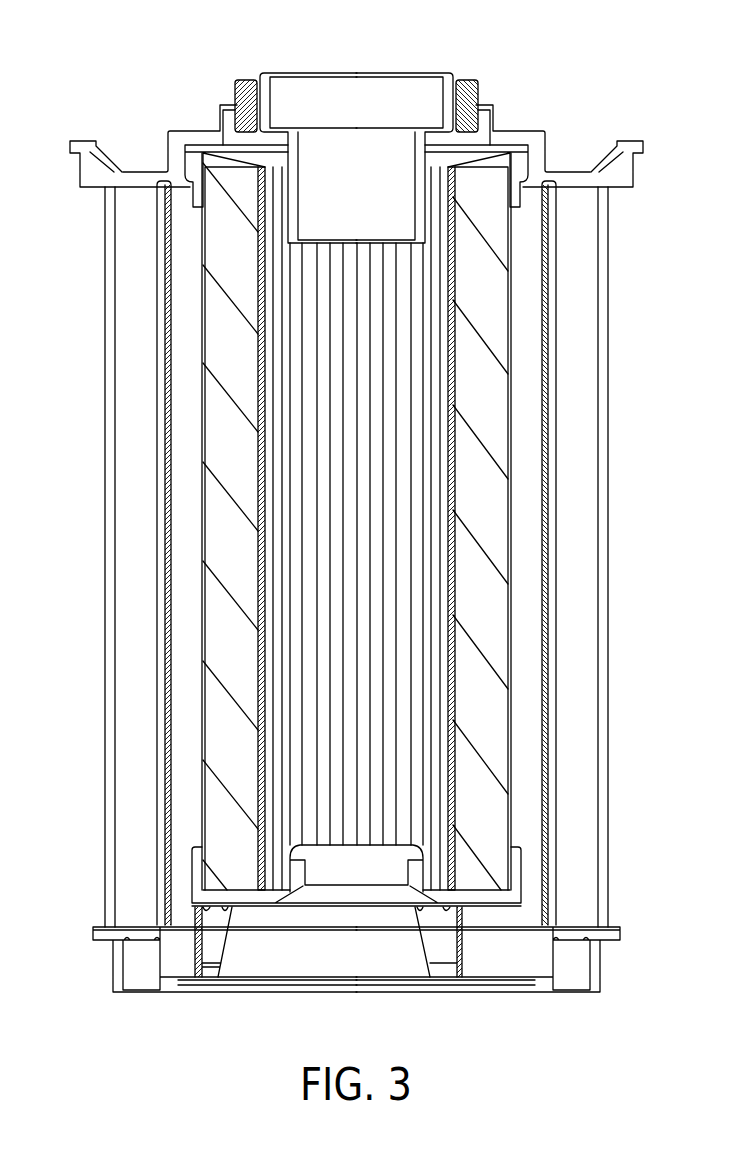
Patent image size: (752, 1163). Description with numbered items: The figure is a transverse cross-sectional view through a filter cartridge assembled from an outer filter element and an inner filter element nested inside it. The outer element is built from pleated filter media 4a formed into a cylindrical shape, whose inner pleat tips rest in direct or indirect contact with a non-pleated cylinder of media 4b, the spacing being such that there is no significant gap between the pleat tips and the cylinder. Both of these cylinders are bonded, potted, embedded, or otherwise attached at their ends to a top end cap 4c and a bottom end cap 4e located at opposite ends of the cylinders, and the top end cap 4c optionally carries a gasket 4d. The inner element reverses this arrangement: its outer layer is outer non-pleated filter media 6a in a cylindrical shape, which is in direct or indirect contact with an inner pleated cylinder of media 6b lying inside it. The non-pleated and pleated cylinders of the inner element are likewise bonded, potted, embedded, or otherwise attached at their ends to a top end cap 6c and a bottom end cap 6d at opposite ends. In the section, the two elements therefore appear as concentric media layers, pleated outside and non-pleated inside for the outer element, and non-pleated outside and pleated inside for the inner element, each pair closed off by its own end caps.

The pleated filter media 4a is at (128, 243).
The non-pleated cylinder of media 4b is at (159, 288).
The top end cap 4c is at (523, 135).
The gasket 4d is at (466, 82).
The bottom end cap 4e is at (113, 973).
The outer non-pleated filter media 6a is at (203, 418).
The inner pleated cylinder of media 6b is at (225, 526).
The top end cap 6c is at (487, 157).
The bottom end cap 6d is at (253, 898).